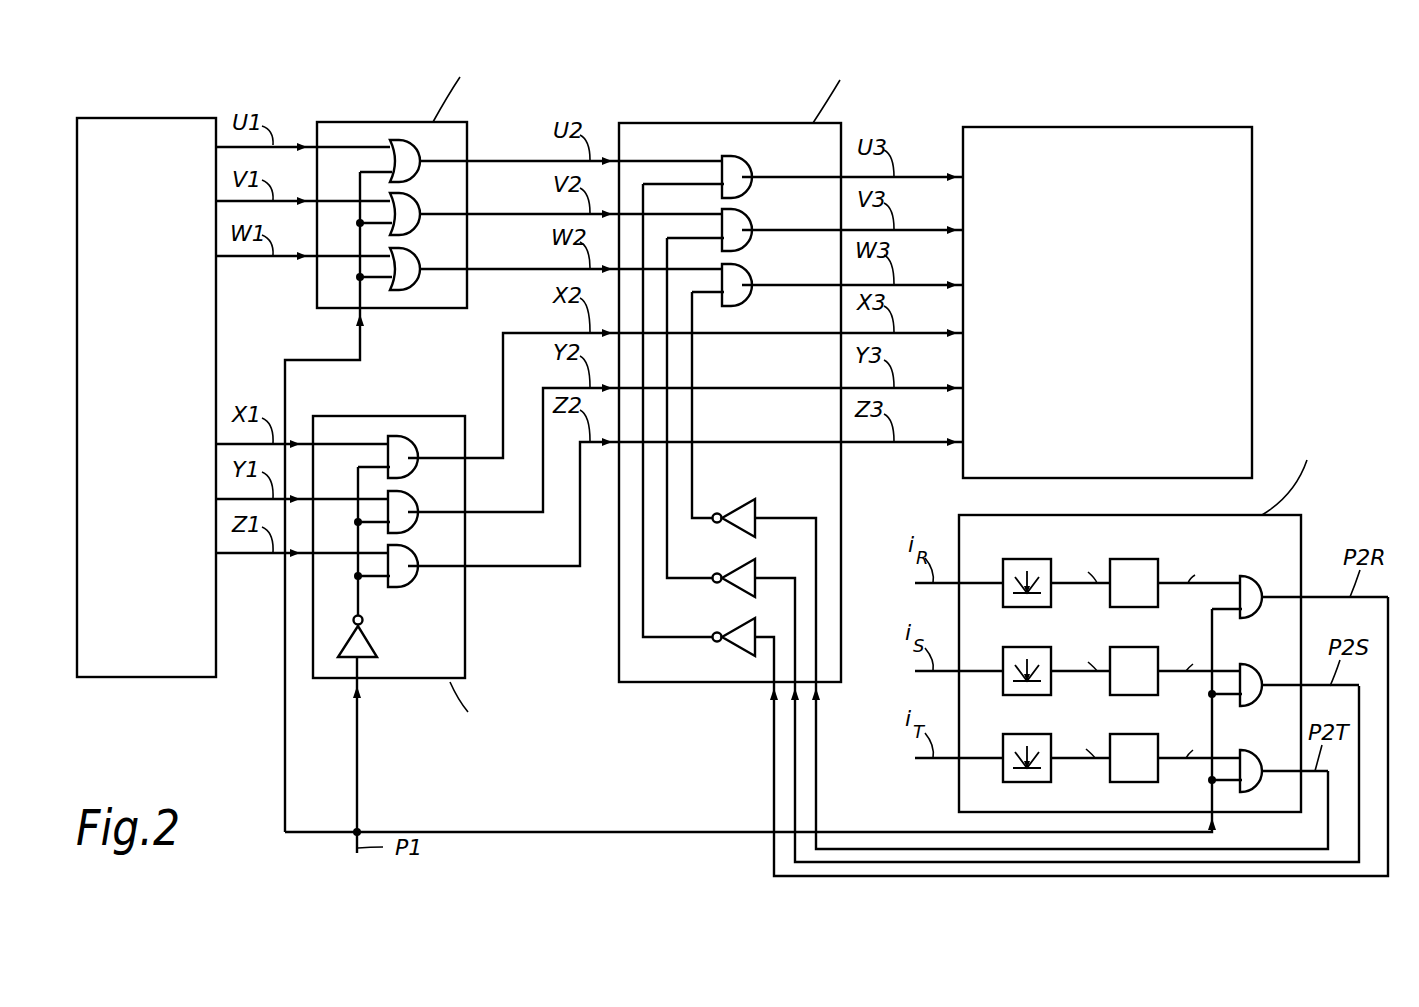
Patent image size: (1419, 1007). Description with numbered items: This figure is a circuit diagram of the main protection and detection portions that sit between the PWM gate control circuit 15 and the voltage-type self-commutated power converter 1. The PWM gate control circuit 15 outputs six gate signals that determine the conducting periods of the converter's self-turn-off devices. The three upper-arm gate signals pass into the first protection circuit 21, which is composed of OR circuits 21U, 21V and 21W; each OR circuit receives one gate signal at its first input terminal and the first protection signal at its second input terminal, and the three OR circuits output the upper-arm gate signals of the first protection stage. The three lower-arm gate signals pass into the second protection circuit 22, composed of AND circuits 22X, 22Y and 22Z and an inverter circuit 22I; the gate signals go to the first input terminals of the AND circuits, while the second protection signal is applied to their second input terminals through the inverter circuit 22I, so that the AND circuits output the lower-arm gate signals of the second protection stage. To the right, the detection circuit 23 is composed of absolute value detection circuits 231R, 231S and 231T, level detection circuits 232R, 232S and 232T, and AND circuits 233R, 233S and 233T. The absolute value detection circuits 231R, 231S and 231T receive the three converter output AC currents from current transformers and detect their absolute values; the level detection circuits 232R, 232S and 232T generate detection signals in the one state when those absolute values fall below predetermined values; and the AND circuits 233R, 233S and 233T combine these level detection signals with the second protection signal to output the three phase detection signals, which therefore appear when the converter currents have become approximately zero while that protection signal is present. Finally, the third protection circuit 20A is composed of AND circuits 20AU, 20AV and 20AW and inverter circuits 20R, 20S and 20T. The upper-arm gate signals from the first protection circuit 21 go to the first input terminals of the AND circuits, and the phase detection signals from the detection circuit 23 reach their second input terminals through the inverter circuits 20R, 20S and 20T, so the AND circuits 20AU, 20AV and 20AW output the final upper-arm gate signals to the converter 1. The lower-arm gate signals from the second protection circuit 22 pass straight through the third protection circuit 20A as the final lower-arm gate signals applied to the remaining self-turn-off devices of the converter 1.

The converter 1 is at (1212, 127).
The PWM gate control circuit 15 is at (175, 118).
The first protection circuit 21 is at (362, 121).
The OR circuit 21U is at (411, 180).
The OR circuit 21V is at (411, 233).
The OR circuit 21W is at (411, 283).
The second protection circuit 22 is at (392, 682).
The AND circuit 22X is at (406, 475).
The AND circuit 22Y is at (406, 530).
The AND circuit 22Z is at (406, 584).
The inverter circuit 22I is at (372, 645).
The third protection circuit 20A is at (730, 123).
The AND circuit 20AU is at (745, 193).
The AND circuit 20AV is at (745, 246).
The AND circuit 20AW is at (745, 301).
The inverter circuit 20R is at (740, 650).
The inverter circuit 20S is at (740, 592).
The inverter circuit 20T is at (745, 536).
The detection circuit 23 is at (1303, 522).
The absolute value detection circuit 231R is at (1016, 559).
The level detection circuit 232R is at (1132, 559).
The AND circuit 233R is at (1262, 578).
The absolute value detection circuit 231S is at (1016, 647).
The level detection circuit 232S is at (1138, 640).
The AND circuit 233S is at (1260, 666).
The absolute value detection circuit 231T is at (1016, 734).
The level detection circuit 232T is at (1138, 727).
The AND circuit 233T is at (1264, 738).